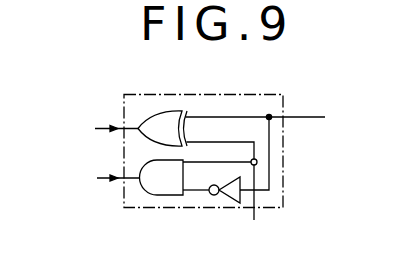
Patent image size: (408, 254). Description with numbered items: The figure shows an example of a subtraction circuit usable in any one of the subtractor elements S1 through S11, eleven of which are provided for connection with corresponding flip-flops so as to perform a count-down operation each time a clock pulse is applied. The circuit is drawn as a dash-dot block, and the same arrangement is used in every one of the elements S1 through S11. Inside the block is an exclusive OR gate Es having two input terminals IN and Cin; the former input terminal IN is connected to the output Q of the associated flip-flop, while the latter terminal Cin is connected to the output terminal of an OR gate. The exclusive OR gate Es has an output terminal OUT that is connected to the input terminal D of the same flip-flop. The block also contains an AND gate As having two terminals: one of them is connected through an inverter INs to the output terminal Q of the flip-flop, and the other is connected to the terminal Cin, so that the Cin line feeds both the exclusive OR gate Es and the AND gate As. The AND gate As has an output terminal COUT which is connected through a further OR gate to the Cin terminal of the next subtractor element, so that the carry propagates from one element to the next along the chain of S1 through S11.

The subtractor element S1 is at (283, 172).
The subtractor element S11 is at (243, 151).
The exclusive OR gate Es is at (162, 128).
The AND gate As is at (162, 177).
The input terminal IN is at (256, 137).
The output terminal OUT is at (103, 131).
The output terminal Cout COUT is at (97, 178).
The input terminal Cin is at (269, 206).
The inverter INs is at (228, 203).